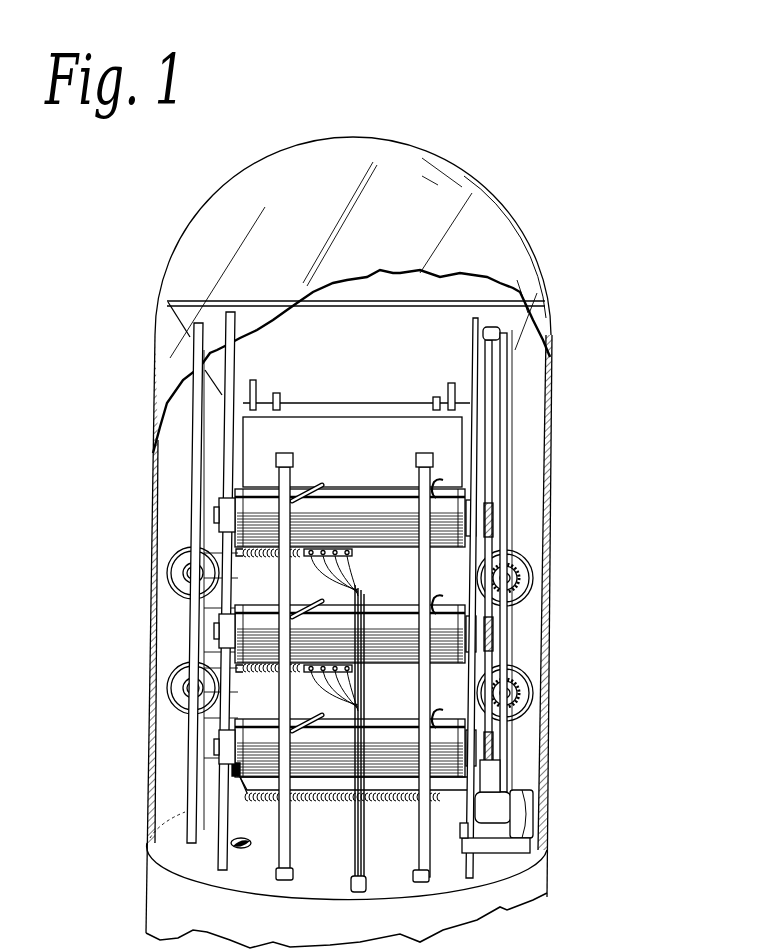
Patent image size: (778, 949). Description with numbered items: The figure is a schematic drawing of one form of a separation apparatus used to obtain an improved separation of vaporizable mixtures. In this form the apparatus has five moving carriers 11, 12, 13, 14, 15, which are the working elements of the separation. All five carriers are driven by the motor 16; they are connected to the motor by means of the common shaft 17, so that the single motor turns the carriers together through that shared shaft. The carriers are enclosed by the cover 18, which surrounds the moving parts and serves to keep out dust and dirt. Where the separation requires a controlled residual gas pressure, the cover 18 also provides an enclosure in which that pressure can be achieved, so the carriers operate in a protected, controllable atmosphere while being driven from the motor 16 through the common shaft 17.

The moving carrier 11 is at (453, 735).
The moving carrier 12 is at (205, 668).
The moving carrier 13 is at (453, 623).
The moving carrier 14 is at (205, 548).
The moving carrier 15 is at (458, 503).
The motor 16 is at (510, 808).
The common shaft 17 is at (490, 543).
The cover 18 is at (506, 209).